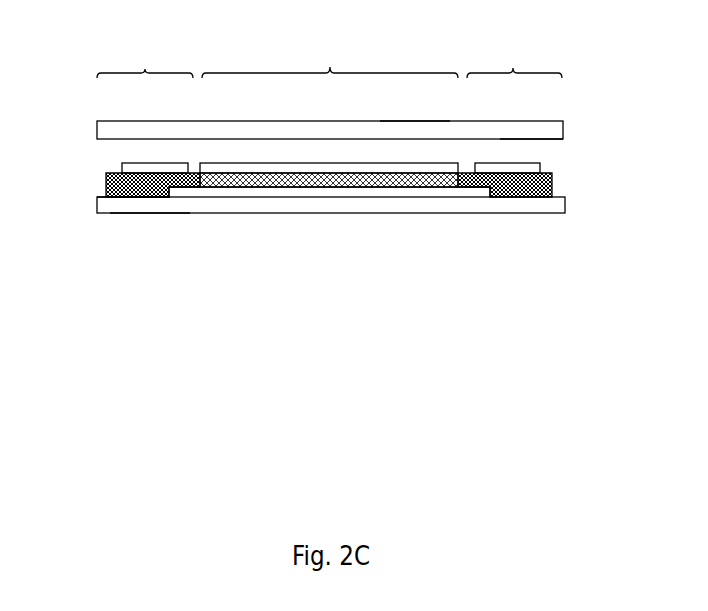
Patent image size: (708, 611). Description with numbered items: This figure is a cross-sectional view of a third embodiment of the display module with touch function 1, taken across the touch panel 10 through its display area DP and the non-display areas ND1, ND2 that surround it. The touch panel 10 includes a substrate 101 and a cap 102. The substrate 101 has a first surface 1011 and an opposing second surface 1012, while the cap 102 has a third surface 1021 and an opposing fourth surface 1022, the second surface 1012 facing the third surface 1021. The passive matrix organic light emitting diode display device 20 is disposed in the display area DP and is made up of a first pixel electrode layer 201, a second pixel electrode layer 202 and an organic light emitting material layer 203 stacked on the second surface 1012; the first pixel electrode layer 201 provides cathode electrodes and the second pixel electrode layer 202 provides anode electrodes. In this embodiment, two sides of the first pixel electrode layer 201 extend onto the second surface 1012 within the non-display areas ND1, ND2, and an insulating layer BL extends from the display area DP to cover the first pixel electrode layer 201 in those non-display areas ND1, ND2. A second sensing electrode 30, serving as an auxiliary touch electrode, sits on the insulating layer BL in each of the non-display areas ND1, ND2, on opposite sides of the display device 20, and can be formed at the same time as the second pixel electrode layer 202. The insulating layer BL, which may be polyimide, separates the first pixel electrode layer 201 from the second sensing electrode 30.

The display module with touch function 1 is at (50, 38).
The touch panel 10 is at (123, 332).
The substrate 101 is at (120, 203).
The first surface 1011 is at (146, 214).
The second surface 1012 is at (103, 194).
The cap 102 is at (547, 127).
The third surface 1021 is at (552, 141).
The fourth surface 1022 is at (415, 120).
The passive matrix organic light emitting diode display device 20 is at (541, 307).
The first pixel electrode layer 201 is at (262, 192).
The second pixel electrode layer 202 is at (257, 170).
The organic light emitting material layer 203 is at (378, 188).
The second sensing electrode 30 is at (152, 168).
The insulating layer BL is at (157, 190).
The non-display area ND1 is at (145, 59).
The non-display area ND2 is at (514, 59).
The display area DP is at (330, 58).